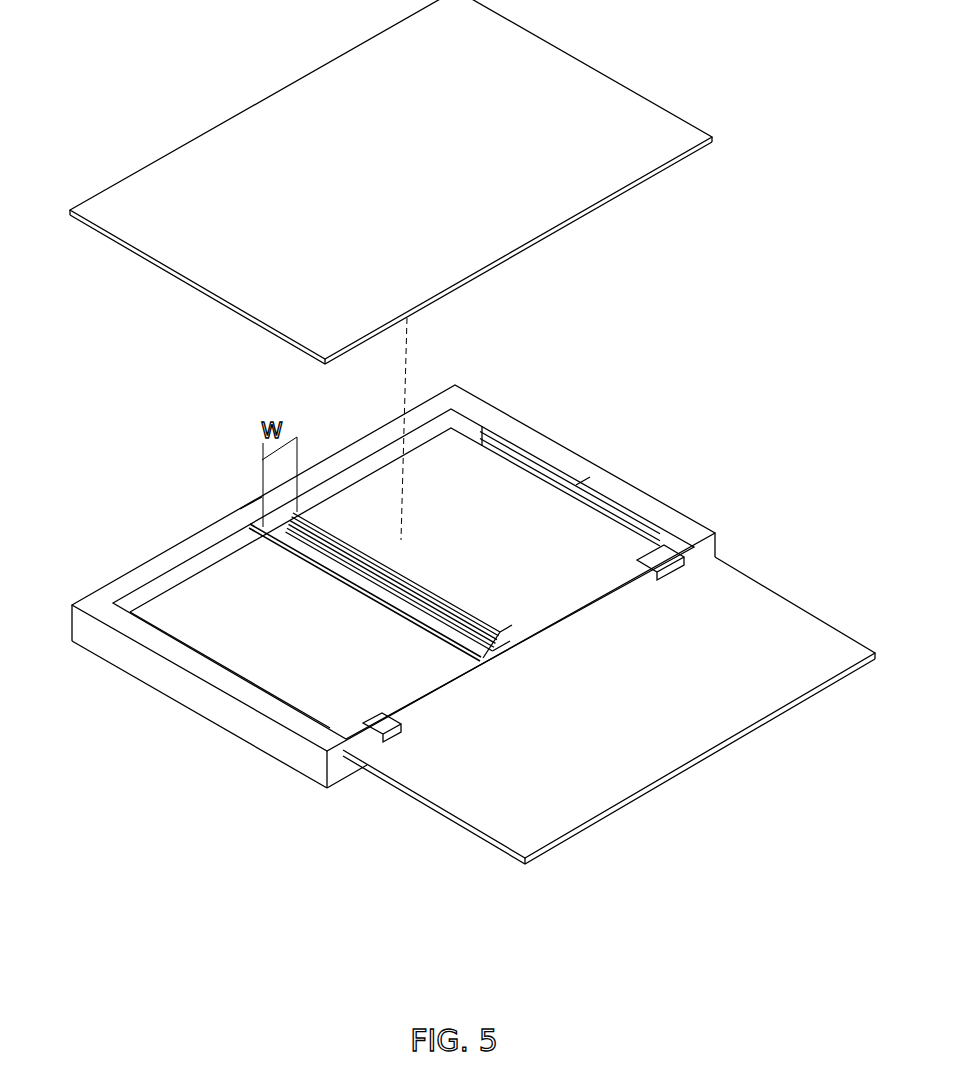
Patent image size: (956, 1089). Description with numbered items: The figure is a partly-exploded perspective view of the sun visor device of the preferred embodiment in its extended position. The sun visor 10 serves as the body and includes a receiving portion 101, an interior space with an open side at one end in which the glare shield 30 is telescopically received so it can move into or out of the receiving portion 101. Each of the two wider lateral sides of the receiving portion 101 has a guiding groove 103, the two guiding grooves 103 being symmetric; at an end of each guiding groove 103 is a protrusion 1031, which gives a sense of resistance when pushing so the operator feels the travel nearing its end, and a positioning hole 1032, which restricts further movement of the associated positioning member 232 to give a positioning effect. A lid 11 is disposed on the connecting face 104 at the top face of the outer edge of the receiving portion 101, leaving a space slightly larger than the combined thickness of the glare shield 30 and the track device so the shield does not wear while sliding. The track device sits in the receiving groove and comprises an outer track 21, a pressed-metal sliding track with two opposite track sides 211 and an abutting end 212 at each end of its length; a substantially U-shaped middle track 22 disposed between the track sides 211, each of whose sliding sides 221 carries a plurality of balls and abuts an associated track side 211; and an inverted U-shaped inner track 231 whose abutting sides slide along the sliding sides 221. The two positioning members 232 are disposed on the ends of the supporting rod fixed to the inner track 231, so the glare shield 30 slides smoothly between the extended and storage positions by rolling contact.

The sun visor 10 is at (406, 576).
The lid 11 is at (423, 182).
The glare shield 30 is at (609, 710).
The receiving portion 101 is at (403, 574).
The guiding groove 103 is at (470, 619).
The connecting face 104 is at (406, 618).
The protrusion 1031 is at (570, 445).
The positioning hole 1032 is at (351, 518).
The outer track 21 is at (393, 572).
The track side 211 is at (390, 587).
The abutting end 212 is at (205, 487).
The middle track 22 is at (365, 592).
The sliding side 221 is at (494, 587).
The inner track 231 is at (524, 608).
The positioning member 232 is at (501, 581).